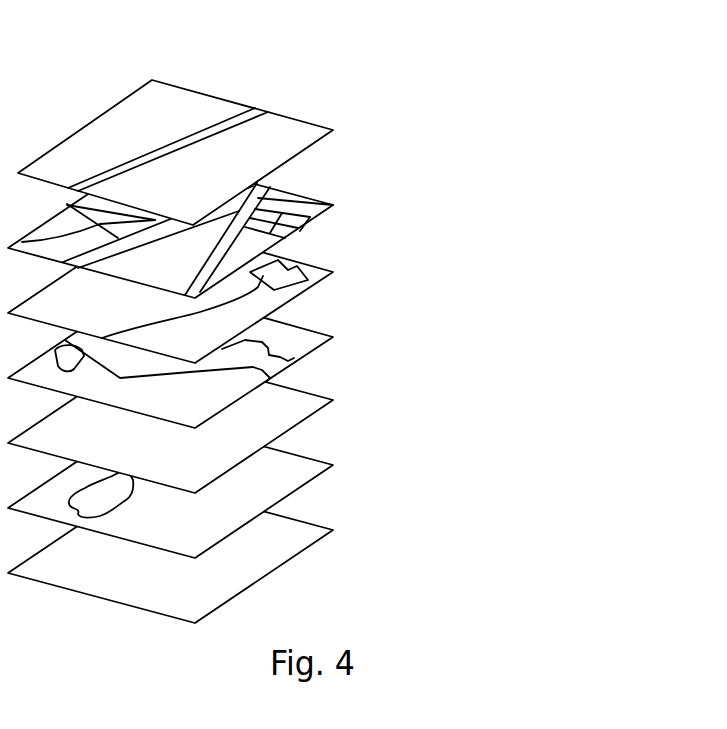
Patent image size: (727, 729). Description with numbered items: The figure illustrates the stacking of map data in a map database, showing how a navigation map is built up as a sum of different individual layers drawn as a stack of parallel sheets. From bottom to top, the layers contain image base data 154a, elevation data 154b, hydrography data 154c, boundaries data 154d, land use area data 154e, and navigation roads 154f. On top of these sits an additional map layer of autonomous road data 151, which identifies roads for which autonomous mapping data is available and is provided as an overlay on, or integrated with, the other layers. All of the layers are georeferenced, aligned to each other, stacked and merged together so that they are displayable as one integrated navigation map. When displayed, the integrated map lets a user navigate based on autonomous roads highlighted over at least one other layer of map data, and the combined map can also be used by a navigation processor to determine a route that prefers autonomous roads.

The map layer of autonomous road data 151 is at (329, 124).
The image base data 154a is at (333, 551).
The elevation data 154b is at (333, 486).
The hydrography data 154c is at (333, 421).
The boundaries data 154d is at (333, 356).
The land use area data 154e is at (333, 291).
The navigation roads 154f is at (333, 226).